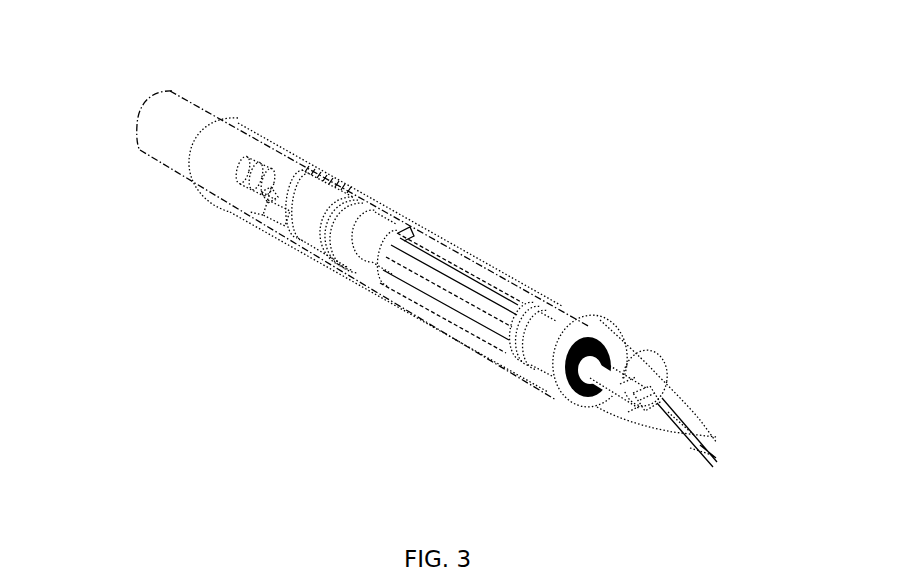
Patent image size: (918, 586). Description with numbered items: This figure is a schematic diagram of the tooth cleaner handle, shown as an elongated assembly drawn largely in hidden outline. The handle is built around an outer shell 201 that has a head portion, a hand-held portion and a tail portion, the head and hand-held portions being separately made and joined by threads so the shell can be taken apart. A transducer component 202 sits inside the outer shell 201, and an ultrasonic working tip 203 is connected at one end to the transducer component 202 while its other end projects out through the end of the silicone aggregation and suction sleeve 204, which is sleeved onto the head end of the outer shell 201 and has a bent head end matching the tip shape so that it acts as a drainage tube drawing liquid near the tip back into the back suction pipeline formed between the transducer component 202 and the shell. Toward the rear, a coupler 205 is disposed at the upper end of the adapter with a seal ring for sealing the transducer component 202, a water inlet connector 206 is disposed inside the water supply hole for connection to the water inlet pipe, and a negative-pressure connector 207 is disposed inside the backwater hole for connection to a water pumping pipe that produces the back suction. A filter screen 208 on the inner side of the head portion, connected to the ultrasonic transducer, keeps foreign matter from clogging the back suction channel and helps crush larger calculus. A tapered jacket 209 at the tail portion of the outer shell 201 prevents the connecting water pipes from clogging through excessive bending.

The outer shell 201 is at (251, 138).
The transducer component 202 is at (407, 254).
The ultrasonic working tip 203 is at (698, 432).
The silicone aggregation and suction sleeve 204 is at (659, 378).
The coupler 205 is at (279, 207).
The water inlet connector 206 is at (267, 200).
The negative-pressure connector 207 is at (277, 169).
The filter screen 208 is at (572, 393).
The jacket 209 is at (163, 138).